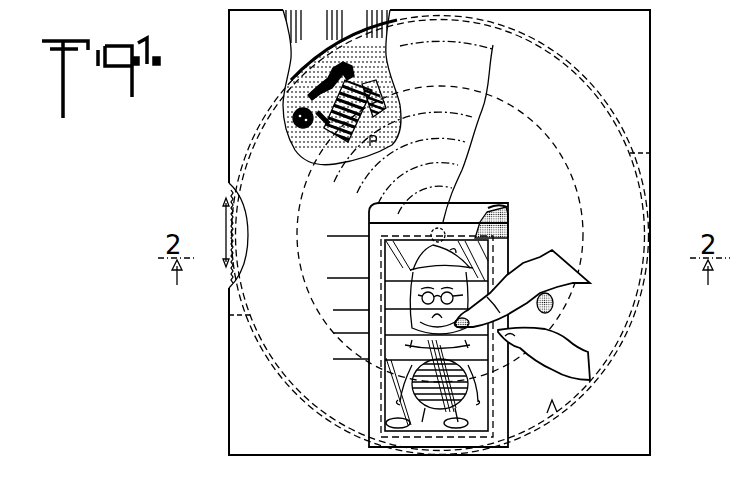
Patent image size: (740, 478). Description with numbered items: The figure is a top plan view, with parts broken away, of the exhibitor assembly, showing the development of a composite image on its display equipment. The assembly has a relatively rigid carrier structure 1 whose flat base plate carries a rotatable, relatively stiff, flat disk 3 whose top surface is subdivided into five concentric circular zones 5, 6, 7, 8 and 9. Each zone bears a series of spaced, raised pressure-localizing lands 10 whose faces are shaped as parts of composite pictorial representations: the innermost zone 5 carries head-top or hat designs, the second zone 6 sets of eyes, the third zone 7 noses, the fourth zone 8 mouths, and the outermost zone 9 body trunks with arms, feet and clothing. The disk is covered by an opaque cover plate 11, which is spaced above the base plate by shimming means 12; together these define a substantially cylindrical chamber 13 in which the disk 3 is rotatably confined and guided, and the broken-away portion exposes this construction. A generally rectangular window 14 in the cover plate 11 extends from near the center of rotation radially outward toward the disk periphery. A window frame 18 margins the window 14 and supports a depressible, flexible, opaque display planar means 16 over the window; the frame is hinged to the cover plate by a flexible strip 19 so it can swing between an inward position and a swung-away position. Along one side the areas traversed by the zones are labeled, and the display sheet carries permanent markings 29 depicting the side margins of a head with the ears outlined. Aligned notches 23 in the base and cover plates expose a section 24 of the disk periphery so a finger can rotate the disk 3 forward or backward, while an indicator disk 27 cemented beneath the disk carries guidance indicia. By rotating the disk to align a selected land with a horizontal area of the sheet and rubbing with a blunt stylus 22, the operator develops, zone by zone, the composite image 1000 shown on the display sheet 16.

The carrier structure 1 is at (438, 231).
The disk 3 is at (295, 68).
The first circular zone 5 is at (443, 218).
The second circular zone 6 is at (457, 180).
The third circular zone 7 is at (467, 153).
The fourth circular zone 8 is at (472, 127).
The fifth circular zone 9 is at (487, 82).
The lands 10 is at (293, 118).
The cover plate 11 is at (633, 356).
The shimming means 12 is at (312, 40).
The cylindrical chamber 13 is at (318, 68).
The window 14 is at (381, 422).
The display planar means 16 is at (483, 248).
The window frame 18 is at (500, 373).
The flexible strip 19 is at (502, 210).
The stylus 22 is at (567, 288).
The notches 23 is at (233, 276).
The section of the peripheral zone of the disk 24 is at (232, 215).
The indicator disk 27 is at (555, 135).
The permanent markings 29 is at (487, 296).
The composite image 1000 is at (372, 370).